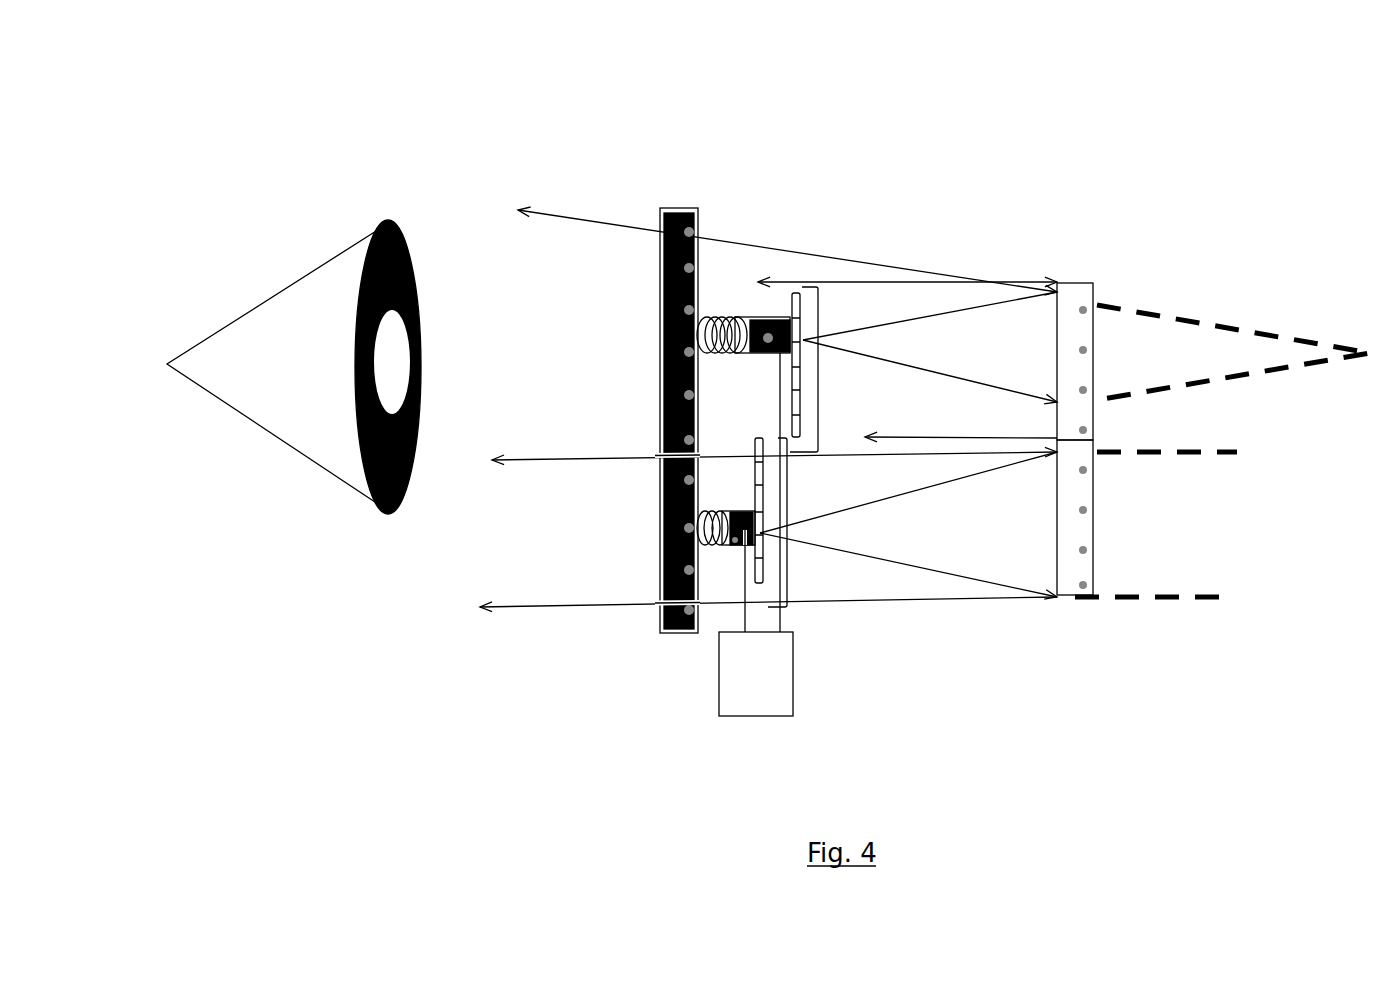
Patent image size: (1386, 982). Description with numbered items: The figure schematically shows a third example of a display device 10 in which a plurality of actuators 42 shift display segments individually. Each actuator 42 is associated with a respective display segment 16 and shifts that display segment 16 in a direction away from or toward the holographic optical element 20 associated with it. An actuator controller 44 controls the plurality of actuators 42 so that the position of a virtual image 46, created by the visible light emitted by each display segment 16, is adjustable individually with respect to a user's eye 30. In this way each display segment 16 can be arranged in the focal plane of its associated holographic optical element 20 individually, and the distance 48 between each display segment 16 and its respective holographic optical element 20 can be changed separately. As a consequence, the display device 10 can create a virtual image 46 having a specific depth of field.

The display device 10 is at (1097, 113).
The display segment 16 is at (818, 370).
The holographic optical element 20 is at (1083, 378).
The user's eye 30 is at (313, 487).
The actuator 42 is at (700, 333).
The actuator controller 44 is at (756, 534).
The virtual image 46 is at (1364, 351).
The distance 48 is at (907, 269).